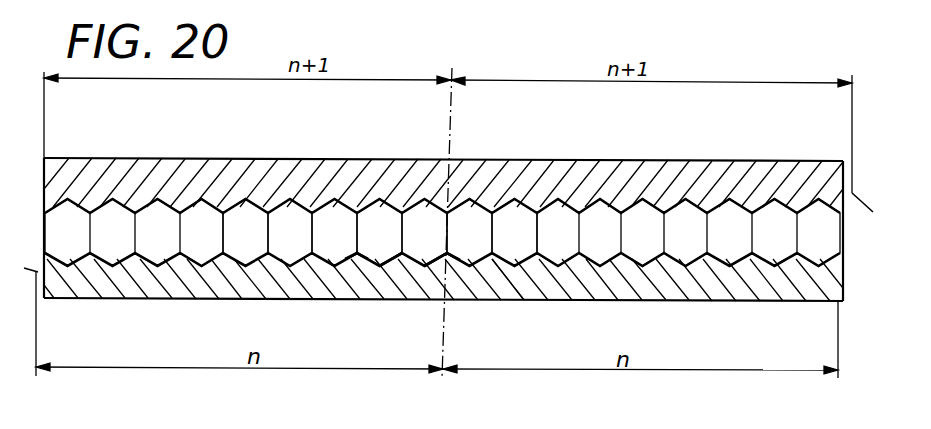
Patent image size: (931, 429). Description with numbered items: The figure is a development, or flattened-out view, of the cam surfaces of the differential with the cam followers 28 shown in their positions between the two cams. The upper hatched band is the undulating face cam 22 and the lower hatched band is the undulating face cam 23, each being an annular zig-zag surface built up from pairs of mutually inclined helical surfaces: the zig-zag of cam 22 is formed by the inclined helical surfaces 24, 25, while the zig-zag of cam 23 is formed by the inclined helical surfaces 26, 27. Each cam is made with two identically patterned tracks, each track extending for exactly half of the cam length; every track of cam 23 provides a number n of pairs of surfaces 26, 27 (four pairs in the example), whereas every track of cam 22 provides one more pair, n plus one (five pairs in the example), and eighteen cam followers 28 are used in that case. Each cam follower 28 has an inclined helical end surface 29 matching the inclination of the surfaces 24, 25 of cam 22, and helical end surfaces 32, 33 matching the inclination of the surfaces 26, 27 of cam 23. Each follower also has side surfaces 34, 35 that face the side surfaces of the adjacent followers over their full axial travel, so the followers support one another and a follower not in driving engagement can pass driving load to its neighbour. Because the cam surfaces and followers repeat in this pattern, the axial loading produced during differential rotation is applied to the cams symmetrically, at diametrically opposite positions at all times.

The undulating face cam 22 is at (662, 160).
The undulating face cam 23 is at (660, 285).
The inclined helical surface 24 is at (440, 195).
The inclined helical surface 25 is at (483, 185).
The inclined helical surface 26 is at (443, 268).
The inclined helical surface 27 is at (497, 300).
The hexagonal element 28 is at (520, 220).
The helical end surface 29 is at (366, 196).
The helical end surface 32 is at (358, 258).
The helical end surface 33 is at (393, 262).
The side surface 34 is at (278, 195).
The side surface 35 is at (312, 205).